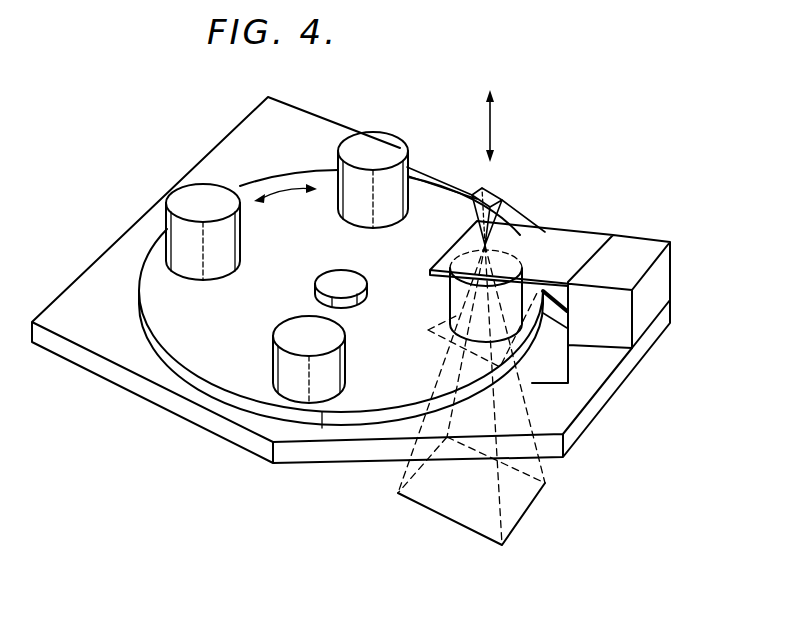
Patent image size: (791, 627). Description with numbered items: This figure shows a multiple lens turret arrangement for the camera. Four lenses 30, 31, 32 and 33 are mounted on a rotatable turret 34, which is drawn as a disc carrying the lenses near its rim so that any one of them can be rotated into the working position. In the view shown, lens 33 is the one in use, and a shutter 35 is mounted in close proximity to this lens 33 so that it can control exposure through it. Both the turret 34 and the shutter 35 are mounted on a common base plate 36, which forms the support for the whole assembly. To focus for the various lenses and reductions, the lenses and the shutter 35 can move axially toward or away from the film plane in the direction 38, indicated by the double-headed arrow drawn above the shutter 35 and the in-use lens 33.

The lens 30 is at (367, 136).
The lens 31 is at (175, 222).
The lens 32 is at (273, 348).
The lens 33 is at (458, 292).
The rotatable turret 34 is at (150, 275).
The shutter 35 is at (555, 237).
The base plate 36 is at (76, 301).
The axial direction 38 is at (495, 118).